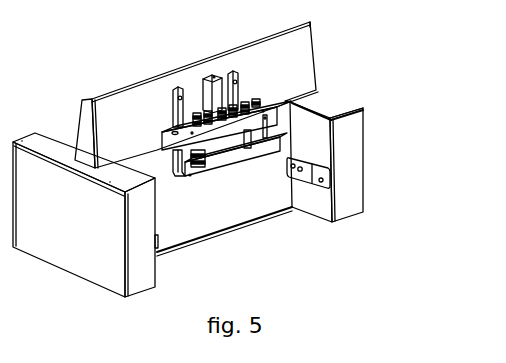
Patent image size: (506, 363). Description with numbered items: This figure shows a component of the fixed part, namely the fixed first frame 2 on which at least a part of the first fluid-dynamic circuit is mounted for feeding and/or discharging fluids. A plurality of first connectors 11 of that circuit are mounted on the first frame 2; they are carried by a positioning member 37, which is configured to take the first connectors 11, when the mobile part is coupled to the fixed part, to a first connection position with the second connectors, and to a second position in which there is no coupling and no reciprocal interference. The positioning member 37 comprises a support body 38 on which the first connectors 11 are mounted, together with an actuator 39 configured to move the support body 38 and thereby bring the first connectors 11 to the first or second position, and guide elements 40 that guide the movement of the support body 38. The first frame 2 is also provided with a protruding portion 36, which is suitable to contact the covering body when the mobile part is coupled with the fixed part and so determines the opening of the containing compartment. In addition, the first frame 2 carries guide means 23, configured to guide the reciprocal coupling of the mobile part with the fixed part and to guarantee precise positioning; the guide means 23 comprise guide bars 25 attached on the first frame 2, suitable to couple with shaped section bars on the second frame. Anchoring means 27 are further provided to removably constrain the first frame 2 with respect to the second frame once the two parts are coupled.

The first frame 2 is at (43, 138).
The first connectors 11 is at (171, 123).
The guide means 23 is at (312, 195).
The guide bar 25 is at (331, 180).
The anchoring means 27 is at (303, 162).
The protruding portion 36 is at (190, 178).
The positioning member 37 is at (211, 74).
The support body 38 is at (268, 87).
The actuator 39 is at (215, 75).
The guide elements 40 is at (173, 107).